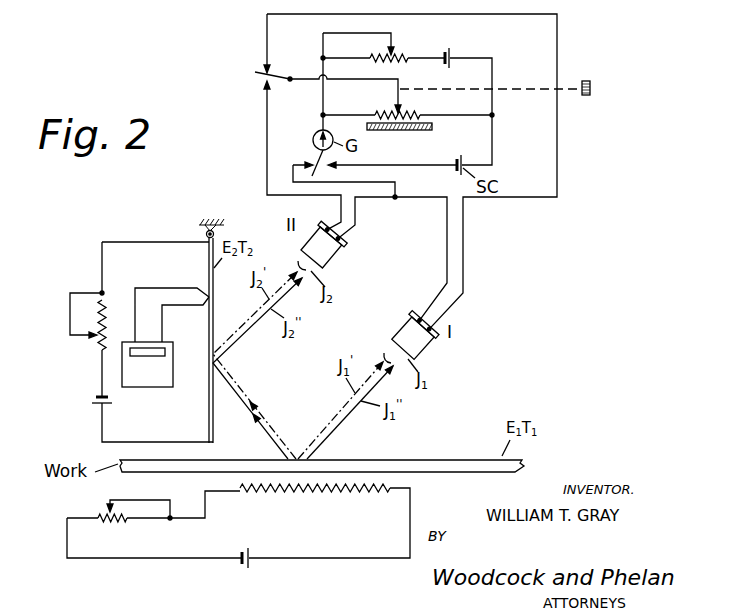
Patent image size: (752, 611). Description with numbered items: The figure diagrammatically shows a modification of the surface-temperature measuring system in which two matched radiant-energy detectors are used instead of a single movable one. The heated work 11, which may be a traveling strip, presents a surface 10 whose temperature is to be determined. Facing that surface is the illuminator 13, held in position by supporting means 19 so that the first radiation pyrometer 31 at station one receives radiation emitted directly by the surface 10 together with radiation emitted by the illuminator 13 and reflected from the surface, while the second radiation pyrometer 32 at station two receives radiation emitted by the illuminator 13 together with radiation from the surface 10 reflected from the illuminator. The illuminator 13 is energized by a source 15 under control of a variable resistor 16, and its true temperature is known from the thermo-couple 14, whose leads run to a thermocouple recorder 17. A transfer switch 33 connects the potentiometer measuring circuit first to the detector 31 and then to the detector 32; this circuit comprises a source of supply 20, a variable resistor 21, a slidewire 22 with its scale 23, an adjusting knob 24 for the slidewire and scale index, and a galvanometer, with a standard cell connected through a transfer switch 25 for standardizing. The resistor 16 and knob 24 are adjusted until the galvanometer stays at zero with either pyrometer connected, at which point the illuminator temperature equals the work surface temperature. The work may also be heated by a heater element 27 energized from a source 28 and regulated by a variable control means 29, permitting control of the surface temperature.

The surface 10 is at (423, 457).
The work 11 is at (470, 466).
The illuminator 13 is at (214, 312).
The thermo-couple 14 is at (206, 301).
The source 15 is at (92, 400).
The variable resistor 16 is at (96, 338).
The thermocouple recorder 17 is at (147, 364).
The supporting means 19 is at (207, 232).
The source of supply 20 is at (451, 56).
The variable resistor 21 is at (395, 55).
The slidewire 22 is at (400, 115).
The scale 23 is at (400, 131).
The adjusting knob 24 is at (591, 92).
The transfer switch 25 is at (316, 162).
The heater element 27 is at (350, 491).
The source 28 is at (247, 571).
The variable control means 29 is at (108, 510).
The radiation pyrometer 31 is at (410, 313).
The radiation pyrometer 32 is at (344, 245).
The transfer switch 33 is at (281, 71).